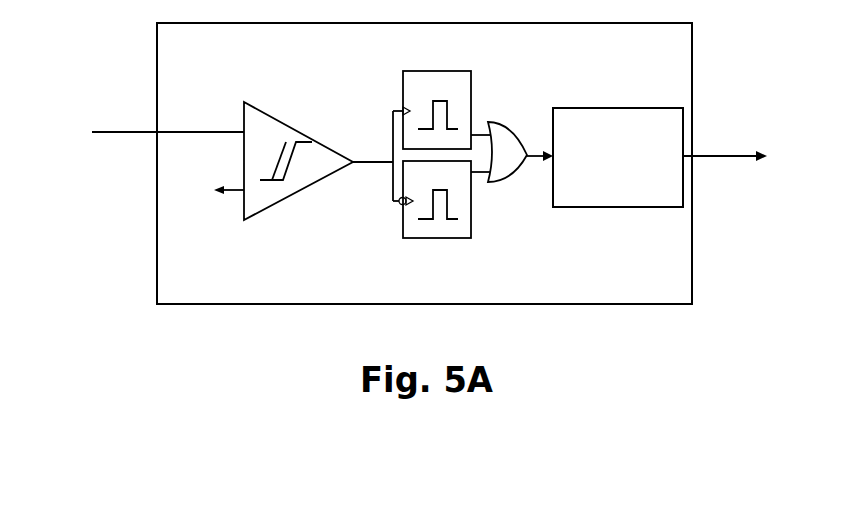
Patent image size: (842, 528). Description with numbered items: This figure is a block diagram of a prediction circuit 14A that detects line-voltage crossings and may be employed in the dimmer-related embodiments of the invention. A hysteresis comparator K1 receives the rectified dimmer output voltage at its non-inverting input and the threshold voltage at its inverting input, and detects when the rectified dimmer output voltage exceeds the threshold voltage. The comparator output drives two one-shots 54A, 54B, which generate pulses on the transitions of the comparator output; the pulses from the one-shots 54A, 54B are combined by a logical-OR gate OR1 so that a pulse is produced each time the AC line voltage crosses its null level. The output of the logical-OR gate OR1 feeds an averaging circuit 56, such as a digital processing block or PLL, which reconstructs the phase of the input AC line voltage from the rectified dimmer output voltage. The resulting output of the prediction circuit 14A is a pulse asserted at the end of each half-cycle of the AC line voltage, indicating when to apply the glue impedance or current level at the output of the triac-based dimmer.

The zero-cross prediction circuit 14A is at (411, 163).
The hysteresis comparator K1 is at (297, 132).
The one-shot 54A is at (460, 71).
The one-shot 54B is at (460, 238).
The logical-OR gate OR1 is at (498, 121).
The averaging circuit 56 is at (618, 157).